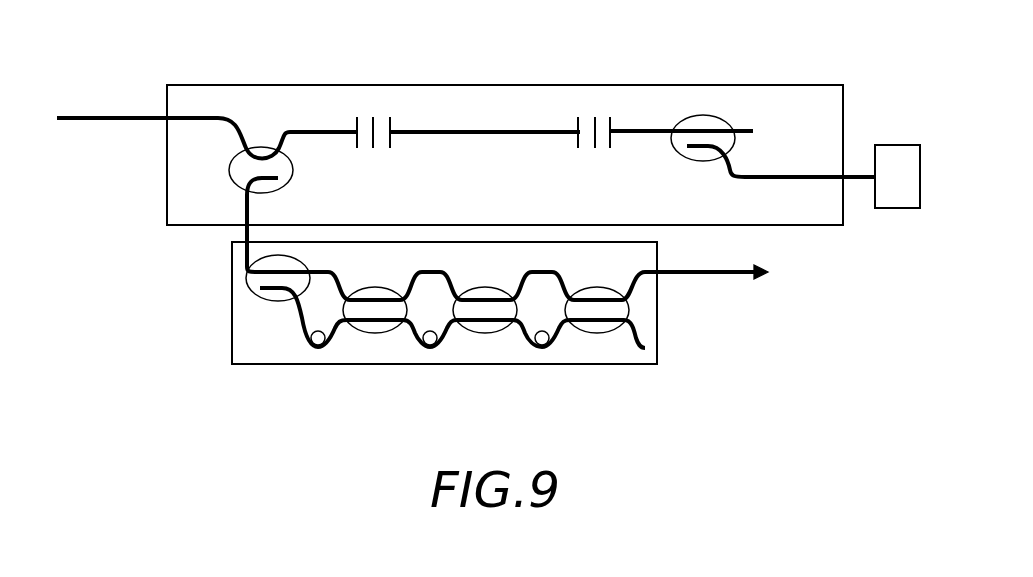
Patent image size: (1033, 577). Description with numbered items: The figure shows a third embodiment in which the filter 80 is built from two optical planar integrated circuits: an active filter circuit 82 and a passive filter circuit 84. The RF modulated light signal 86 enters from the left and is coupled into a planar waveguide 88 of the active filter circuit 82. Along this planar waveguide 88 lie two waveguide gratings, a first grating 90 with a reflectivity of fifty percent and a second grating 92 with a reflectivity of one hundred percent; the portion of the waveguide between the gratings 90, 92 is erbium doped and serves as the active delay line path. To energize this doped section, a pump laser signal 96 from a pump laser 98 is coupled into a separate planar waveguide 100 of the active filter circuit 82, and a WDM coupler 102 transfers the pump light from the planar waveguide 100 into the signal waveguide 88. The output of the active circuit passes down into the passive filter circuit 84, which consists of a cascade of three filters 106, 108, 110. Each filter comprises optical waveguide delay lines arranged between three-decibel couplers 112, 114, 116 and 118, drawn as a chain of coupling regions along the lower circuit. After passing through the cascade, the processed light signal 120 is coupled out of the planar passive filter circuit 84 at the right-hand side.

The filter 80 is at (187, 393).
The active filter circuit 82 is at (693, 85).
The passive filter circuit 84 is at (608, 366).
The RF modulated light signal 86 is at (102, 117).
The planar waveguide 88 is at (220, 117).
The first waveguide grating 90 is at (395, 121).
The second waveguide grating 92 is at (613, 121).
The pump laser signal 96 is at (858, 178).
The pump laser 98 is at (888, 208).
The planar waveguide 100 is at (797, 179).
The WDM coupler 102 is at (728, 120).
The filter 106 is at (322, 353).
The filter 108 is at (430, 353).
The filter 110 is at (542, 353).
The 3 dB coupler 112 is at (263, 302).
The 3 dB coupler 114 is at (372, 333).
The 3 dB coupler 116 is at (483, 333).
The 3 dB coupler 118 is at (595, 333).
The processed light signal 120 is at (703, 273).